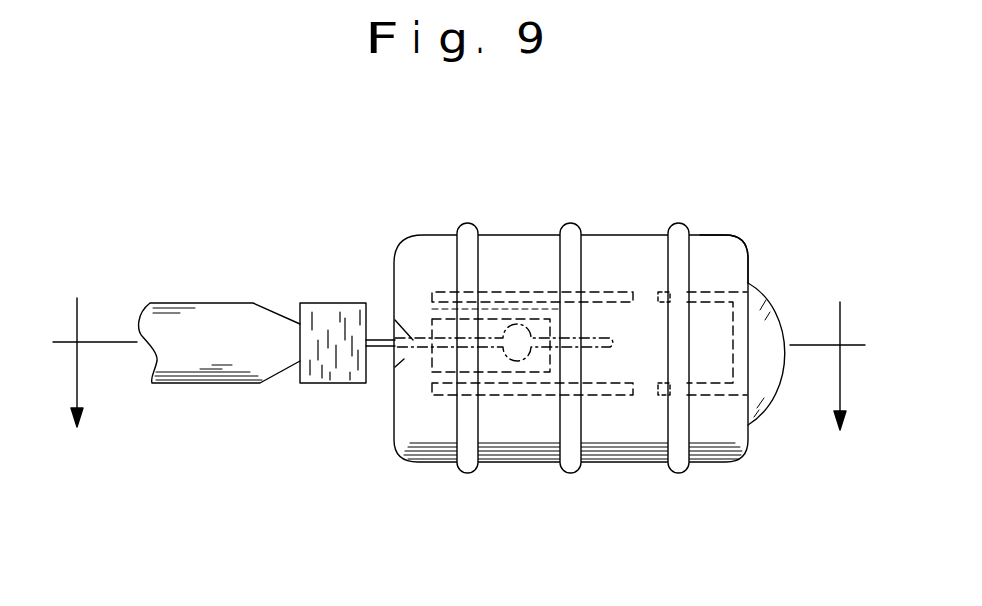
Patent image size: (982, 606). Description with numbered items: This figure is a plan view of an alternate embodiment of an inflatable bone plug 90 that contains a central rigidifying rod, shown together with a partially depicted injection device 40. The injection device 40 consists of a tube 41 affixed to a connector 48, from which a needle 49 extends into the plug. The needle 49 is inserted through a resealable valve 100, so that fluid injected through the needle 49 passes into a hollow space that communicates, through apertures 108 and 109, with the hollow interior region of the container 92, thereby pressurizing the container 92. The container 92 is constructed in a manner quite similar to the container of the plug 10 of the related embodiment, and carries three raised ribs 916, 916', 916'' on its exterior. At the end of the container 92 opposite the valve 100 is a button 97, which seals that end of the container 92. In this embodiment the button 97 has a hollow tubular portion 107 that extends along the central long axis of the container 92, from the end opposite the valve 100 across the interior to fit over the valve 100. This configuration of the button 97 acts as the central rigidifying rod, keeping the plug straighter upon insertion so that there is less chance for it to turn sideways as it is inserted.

The plug 10 is at (461, 362).
The injection device 40 is at (202, 392).
The tube 41 is at (200, 300).
The connector 48 is at (310, 303).
The needle 49 is at (390, 318).
The bone plug 90 is at (445, 233).
The container 92 is at (745, 252).
The button 97 is at (762, 303).
The resealable valve 100 is at (580, 370).
The hollow tubular portion 107 is at (433, 399).
The aperture 108 is at (648, 400).
The aperture 109 is at (645, 290).
The raised rib 916 is at (430, 394).
The raised rib 916' is at (603, 394).
The raised rib 916'' is at (735, 394).